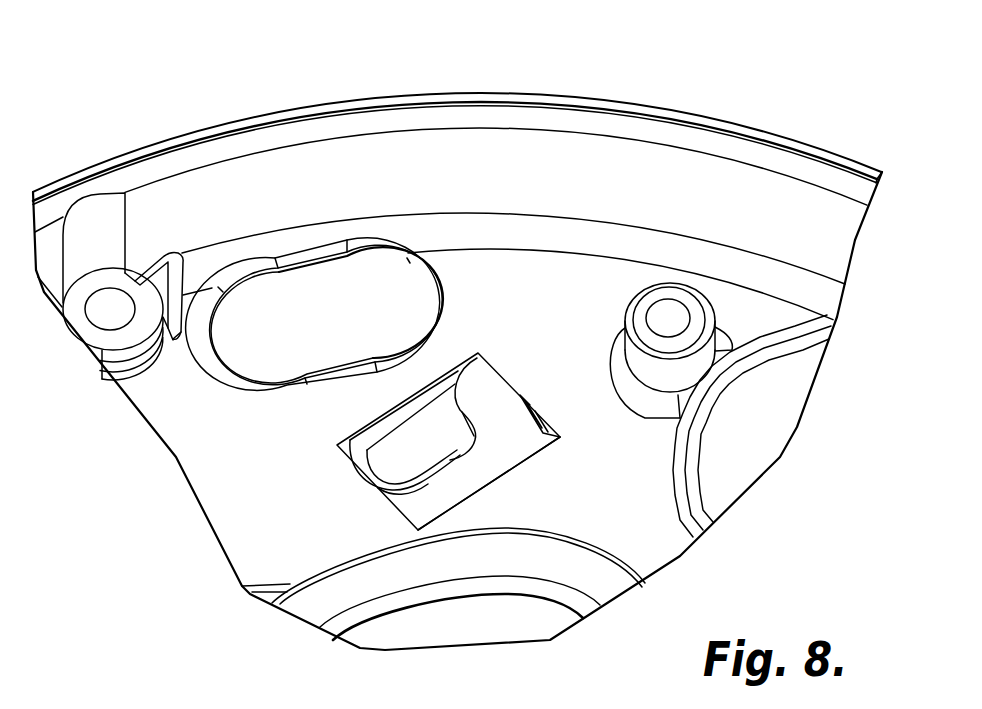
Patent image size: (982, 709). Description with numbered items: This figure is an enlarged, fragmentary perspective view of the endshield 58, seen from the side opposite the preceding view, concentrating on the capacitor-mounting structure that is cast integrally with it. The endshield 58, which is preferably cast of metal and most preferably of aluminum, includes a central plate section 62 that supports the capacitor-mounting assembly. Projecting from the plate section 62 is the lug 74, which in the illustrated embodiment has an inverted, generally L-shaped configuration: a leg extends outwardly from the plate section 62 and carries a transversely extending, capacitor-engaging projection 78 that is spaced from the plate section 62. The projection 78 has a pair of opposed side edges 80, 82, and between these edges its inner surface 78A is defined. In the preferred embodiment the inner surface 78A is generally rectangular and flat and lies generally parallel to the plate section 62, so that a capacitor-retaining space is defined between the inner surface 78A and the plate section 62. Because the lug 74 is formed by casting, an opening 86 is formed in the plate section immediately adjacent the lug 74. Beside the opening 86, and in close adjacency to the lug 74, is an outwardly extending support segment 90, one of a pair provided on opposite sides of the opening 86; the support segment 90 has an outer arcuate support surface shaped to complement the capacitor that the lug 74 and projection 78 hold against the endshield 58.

The endshield 58 is at (667, 98).
The central plate section 62 is at (760, 203).
The lug 74 is at (480, 420).
The capacitor-engaging projection 78 is at (403, 487).
The inner surface 78A is at (442, 443).
The side edge 80 is at (493, 362).
The side edge 82 is at (370, 473).
The opening 86 is at (474, 490).
The support segment 90 is at (525, 417).